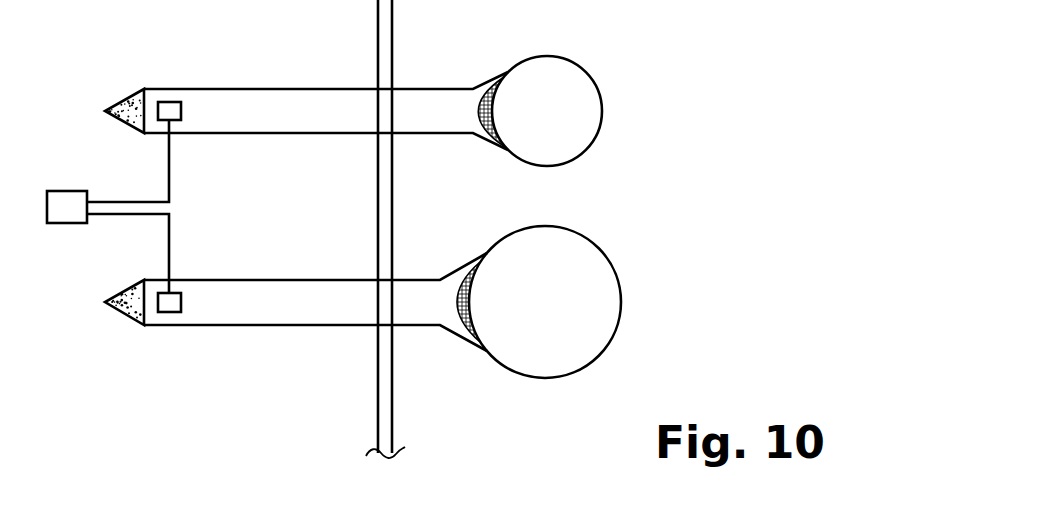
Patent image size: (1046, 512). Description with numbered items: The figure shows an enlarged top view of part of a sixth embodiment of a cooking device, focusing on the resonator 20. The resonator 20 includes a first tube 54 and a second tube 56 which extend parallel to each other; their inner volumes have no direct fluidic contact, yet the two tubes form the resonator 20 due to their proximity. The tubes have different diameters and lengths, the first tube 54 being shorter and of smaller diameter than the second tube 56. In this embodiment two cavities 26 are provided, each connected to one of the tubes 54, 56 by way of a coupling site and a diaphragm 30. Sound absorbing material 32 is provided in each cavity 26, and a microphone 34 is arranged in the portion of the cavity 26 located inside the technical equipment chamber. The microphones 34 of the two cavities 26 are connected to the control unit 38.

The resonator 20 is at (695, 182).
The cavity 26 is at (277, 100).
The diaphragm 30 is at (490, 78).
The sound absorbing material 32 is at (137, 98).
The microphone 34 is at (169, 100).
The control unit 38 is at (68, 228).
The first tube 54 is at (603, 112).
The second tube 56 is at (620, 302).